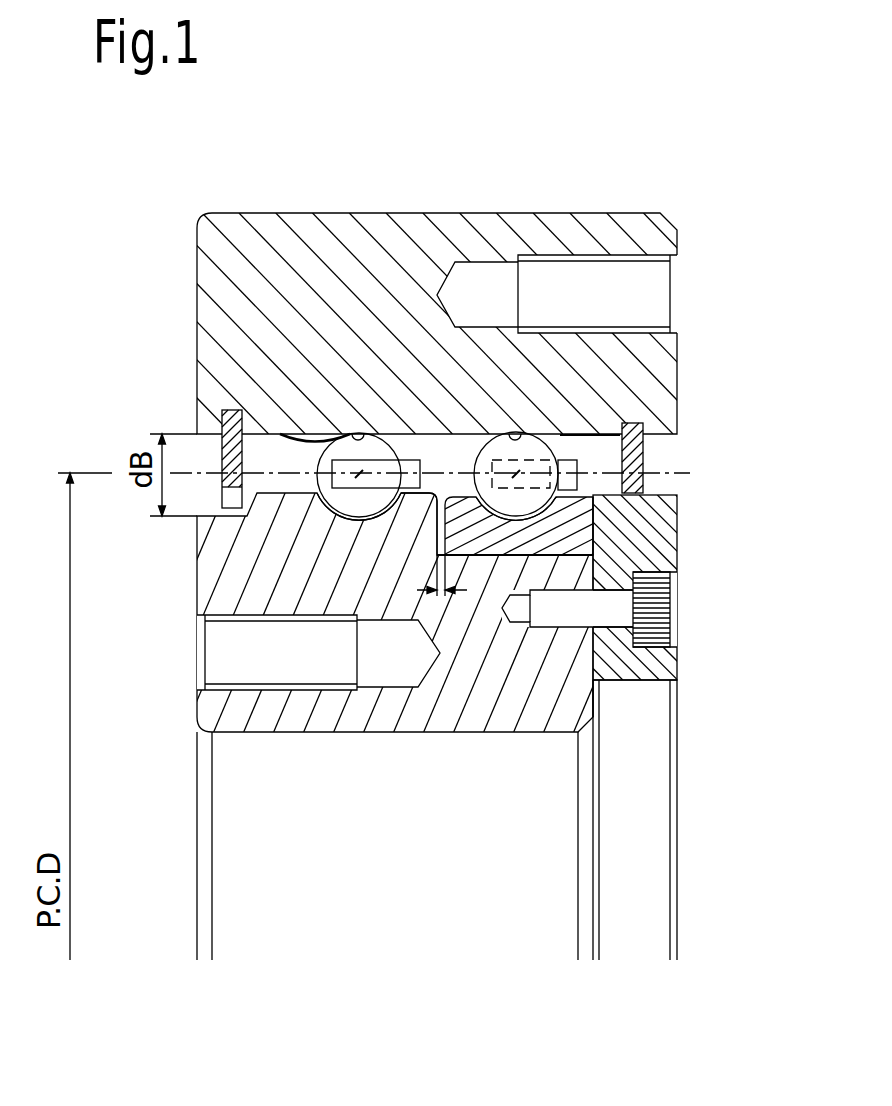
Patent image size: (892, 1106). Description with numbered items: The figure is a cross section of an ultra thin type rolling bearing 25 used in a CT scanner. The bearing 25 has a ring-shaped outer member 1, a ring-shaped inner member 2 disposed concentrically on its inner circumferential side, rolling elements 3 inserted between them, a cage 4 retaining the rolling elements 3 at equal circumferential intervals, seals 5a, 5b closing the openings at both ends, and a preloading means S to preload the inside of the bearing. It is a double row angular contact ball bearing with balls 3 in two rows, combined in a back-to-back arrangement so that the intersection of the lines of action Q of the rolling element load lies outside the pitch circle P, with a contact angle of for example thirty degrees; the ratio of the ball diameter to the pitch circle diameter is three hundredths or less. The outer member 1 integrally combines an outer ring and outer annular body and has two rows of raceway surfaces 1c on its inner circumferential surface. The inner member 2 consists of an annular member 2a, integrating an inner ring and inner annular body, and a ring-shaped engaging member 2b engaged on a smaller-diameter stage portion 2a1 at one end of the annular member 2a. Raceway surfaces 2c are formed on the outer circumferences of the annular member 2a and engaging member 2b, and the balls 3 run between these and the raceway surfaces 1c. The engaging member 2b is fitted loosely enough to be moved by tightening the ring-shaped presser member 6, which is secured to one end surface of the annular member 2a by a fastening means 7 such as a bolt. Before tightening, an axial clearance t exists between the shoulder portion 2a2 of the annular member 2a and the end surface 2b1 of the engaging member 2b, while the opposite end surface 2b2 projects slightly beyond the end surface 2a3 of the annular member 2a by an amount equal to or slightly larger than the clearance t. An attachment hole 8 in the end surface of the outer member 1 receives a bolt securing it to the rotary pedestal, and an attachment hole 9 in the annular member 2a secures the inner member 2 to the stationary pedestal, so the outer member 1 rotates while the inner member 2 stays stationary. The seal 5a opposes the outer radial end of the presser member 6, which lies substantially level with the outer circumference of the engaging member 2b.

The outer member 1 is at (192, 210).
The raceway surfaces 1c is at (335, 432).
The inner member 2 is at (178, 735).
The annular member 2a is at (332, 713).
The stage portion 2a1 is at (545, 560).
The shoulder portion 2a2 is at (410, 497).
The end surface 2a3 is at (597, 708).
The engaging member 2b is at (537, 560).
The end surface 2b1 is at (430, 560).
The end surface 2b2 is at (593, 535).
The raceway surfaces 2c is at (322, 498).
The rolling elements 3 is at (352, 514).
The cage 4 is at (367, 461).
The seal 5a is at (640, 460).
The seal 5b is at (225, 425).
The presser member 6 is at (627, 675).
The fastening means 7 is at (612, 613).
The attachment hole 8 is at (640, 286).
The attachment hole 9 is at (225, 660).
The bearing 25 is at (668, 185).
The preloading means S is at (470, 560).
The axial clearance t is at (433, 575).
The pitch circle P is at (512, 434).
The lines of action Q is at (366, 432).